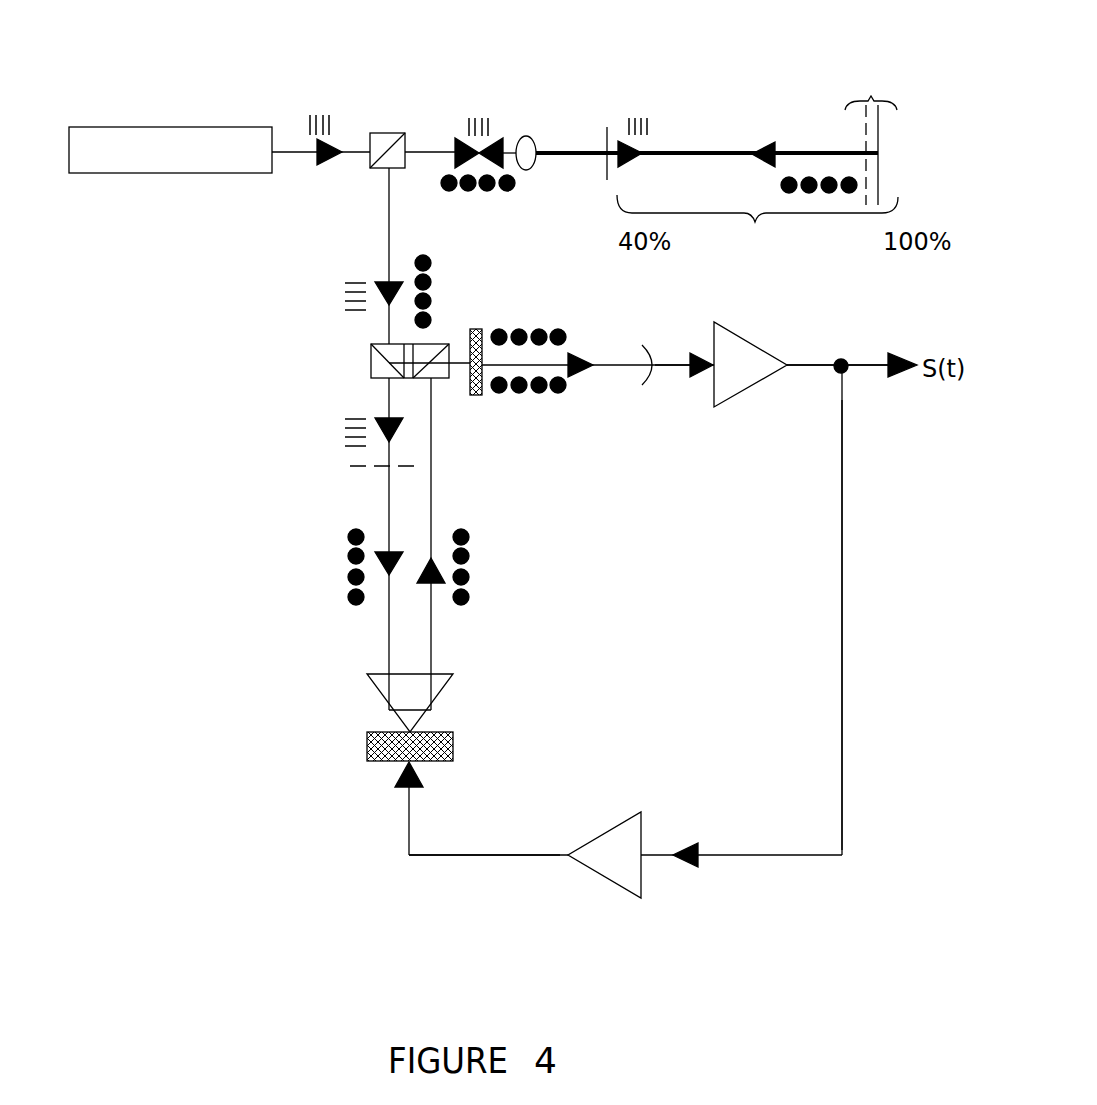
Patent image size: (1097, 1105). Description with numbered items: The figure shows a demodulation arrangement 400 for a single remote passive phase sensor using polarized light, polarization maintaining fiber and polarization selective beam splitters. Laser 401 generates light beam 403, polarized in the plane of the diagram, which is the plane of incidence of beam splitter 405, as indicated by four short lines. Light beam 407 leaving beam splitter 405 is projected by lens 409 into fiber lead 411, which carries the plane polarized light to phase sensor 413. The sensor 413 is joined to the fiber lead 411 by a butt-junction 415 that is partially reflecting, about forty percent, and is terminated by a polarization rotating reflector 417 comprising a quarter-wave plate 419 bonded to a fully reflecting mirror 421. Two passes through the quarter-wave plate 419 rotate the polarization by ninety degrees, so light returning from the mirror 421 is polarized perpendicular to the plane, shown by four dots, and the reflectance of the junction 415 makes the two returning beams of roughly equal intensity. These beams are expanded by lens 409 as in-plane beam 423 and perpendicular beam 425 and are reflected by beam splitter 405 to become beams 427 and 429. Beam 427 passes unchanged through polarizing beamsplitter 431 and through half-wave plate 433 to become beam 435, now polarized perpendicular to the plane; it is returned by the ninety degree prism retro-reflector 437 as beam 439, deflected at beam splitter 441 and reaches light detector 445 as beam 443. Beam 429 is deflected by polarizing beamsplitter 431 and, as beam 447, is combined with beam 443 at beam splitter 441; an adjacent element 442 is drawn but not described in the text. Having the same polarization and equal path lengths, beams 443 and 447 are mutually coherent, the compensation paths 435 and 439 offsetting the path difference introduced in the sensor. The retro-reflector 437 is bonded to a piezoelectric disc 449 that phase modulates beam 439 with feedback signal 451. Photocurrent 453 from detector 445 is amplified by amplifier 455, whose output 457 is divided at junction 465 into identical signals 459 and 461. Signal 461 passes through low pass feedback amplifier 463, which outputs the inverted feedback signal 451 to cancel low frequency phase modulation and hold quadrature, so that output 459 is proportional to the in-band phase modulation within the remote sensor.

The fiber optic sensor system 400 is at (776, 67).
The laser 401 is at (137, 126).
The light beam 403 is at (364, 153).
The beam splitter 405 is at (387, 134).
The light beam 407 is at (422, 152).
The lens 409 is at (533, 143).
The fiber lead 411 is at (580, 150).
The phase sensor 413 is at (793, 205).
The butt-junction 415 is at (610, 126).
The polarization rotating reflector 417 is at (871, 98).
The quarter-wave plate 419 is at (866, 145).
The mirror 421 is at (878, 148).
The light beam 423 is at (497, 120).
The light beam 425 is at (483, 193).
The beam 427 is at (340, 300).
The beam 429 is at (432, 311).
The polarizing beamsplitter 431 is at (371, 368).
The half-wave plate 433 is at (350, 466).
The beam 435 is at (388, 623).
The retro-reflector 437 is at (385, 711).
The beam 439 is at (432, 516).
The beam splitter 441 is at (449, 379).
The polarizer 442 is at (482, 330).
The beam 443 is at (549, 395).
The light detector 445 is at (650, 382).
The beam 447 is at (538, 327).
The piezoelectric disc 449 is at (365, 762).
The feedback signal 451 is at (436, 856).
The photocurrent 453 is at (670, 360).
The amplifier 455 is at (760, 349).
The output 457 is at (815, 366).
The signal output 459 is at (860, 372).
The signal 461 is at (843, 605).
The low pass feedback amplifier 463 is at (612, 880).
The junction 465 is at (846, 363).